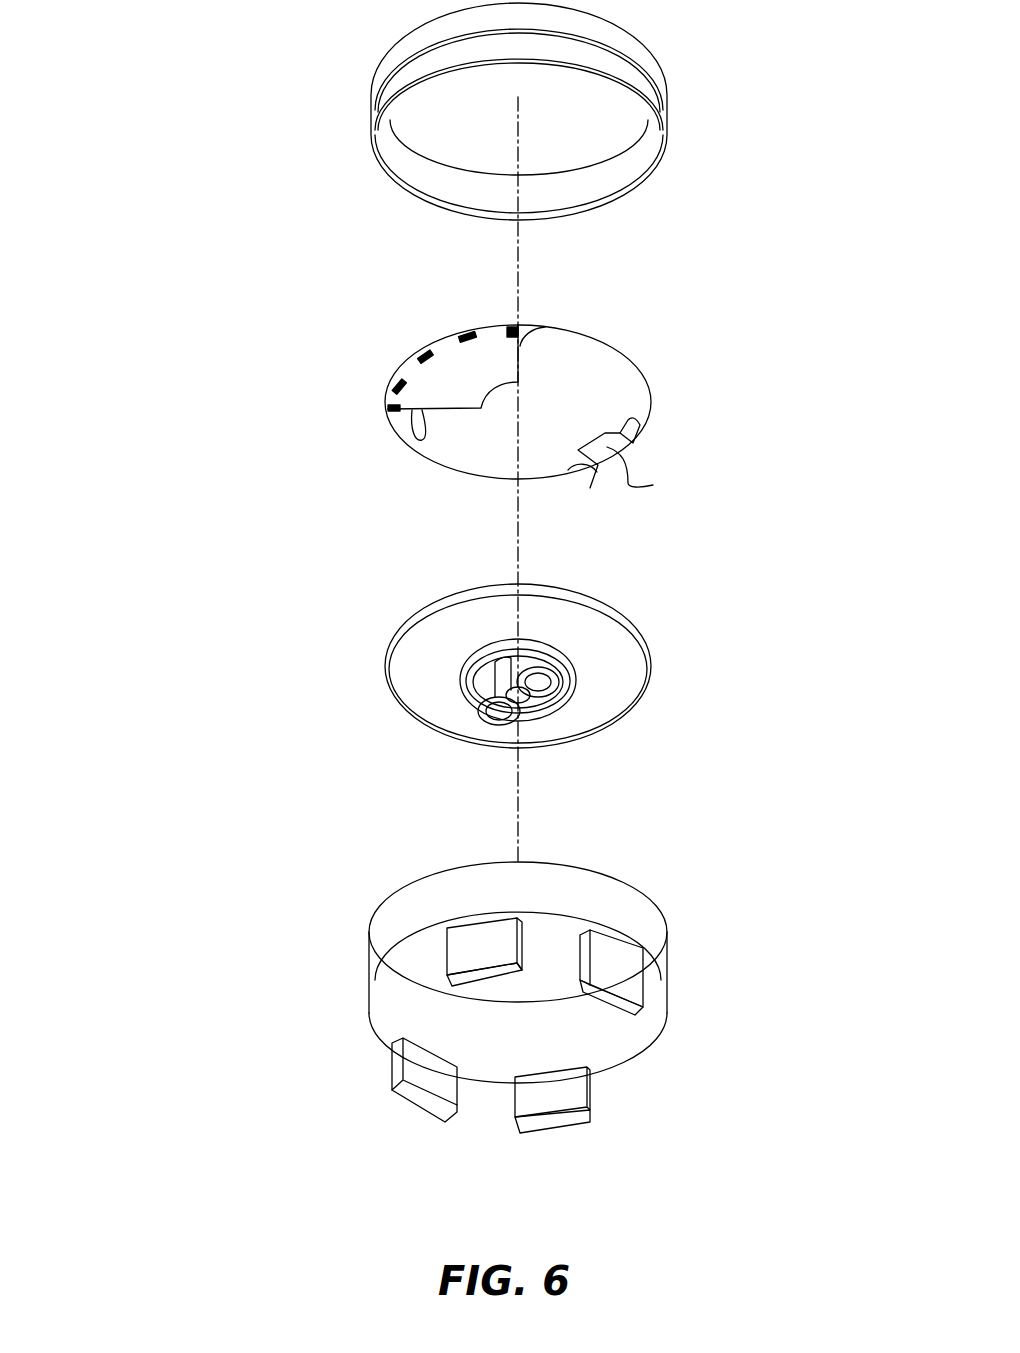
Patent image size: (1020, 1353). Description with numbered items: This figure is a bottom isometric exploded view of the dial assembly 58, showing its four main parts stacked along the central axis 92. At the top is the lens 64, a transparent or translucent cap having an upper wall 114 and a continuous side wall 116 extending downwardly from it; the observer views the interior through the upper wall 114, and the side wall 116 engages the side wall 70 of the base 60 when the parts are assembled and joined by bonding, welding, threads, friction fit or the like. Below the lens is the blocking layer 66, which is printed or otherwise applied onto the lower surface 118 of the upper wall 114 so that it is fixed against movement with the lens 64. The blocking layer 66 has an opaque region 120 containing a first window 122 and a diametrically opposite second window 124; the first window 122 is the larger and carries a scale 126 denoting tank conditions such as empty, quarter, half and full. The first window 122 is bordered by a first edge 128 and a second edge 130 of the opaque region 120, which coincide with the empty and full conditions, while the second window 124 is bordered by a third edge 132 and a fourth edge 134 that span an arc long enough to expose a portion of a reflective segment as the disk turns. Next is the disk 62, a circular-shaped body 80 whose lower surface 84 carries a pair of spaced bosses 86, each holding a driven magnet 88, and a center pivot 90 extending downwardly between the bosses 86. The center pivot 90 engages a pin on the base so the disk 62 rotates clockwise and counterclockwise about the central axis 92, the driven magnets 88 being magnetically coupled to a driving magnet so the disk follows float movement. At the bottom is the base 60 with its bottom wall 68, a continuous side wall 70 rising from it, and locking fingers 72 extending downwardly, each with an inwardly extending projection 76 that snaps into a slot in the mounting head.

The dial assembly 58 is at (172, 206).
The base 60 is at (500, 989).
The disk 62 is at (519, 668).
The lens 64 is at (502, 113).
The blocking layer 66 is at (516, 413).
The bottom wall 68 is at (633, 1038).
The side wall 70 is at (383, 943).
The locking fingers 72 is at (605, 952).
The inwardly extending projection 76 is at (582, 990).
The circular-shaped body 80 is at (398, 632).
The lower surface 84 is at (613, 713).
The bosses 86 is at (541, 660).
The driven magnet 88 is at (540, 697).
The center pivot 90 is at (500, 677).
The central axis 92 is at (519, 782).
The upper wall 114 is at (610, 127).
The side wall 116 is at (387, 107).
The lower surface 118 is at (483, 131).
The opaque region 120 is at (588, 352).
The first window 122 is at (423, 380).
The second window 124 is at (605, 445).
The scale 126 is at (403, 358).
The first edge 128 is at (523, 347).
The second edge 130 is at (403, 443).
The third edge 132 is at (568, 472).
The fourth edge 134 is at (637, 427).